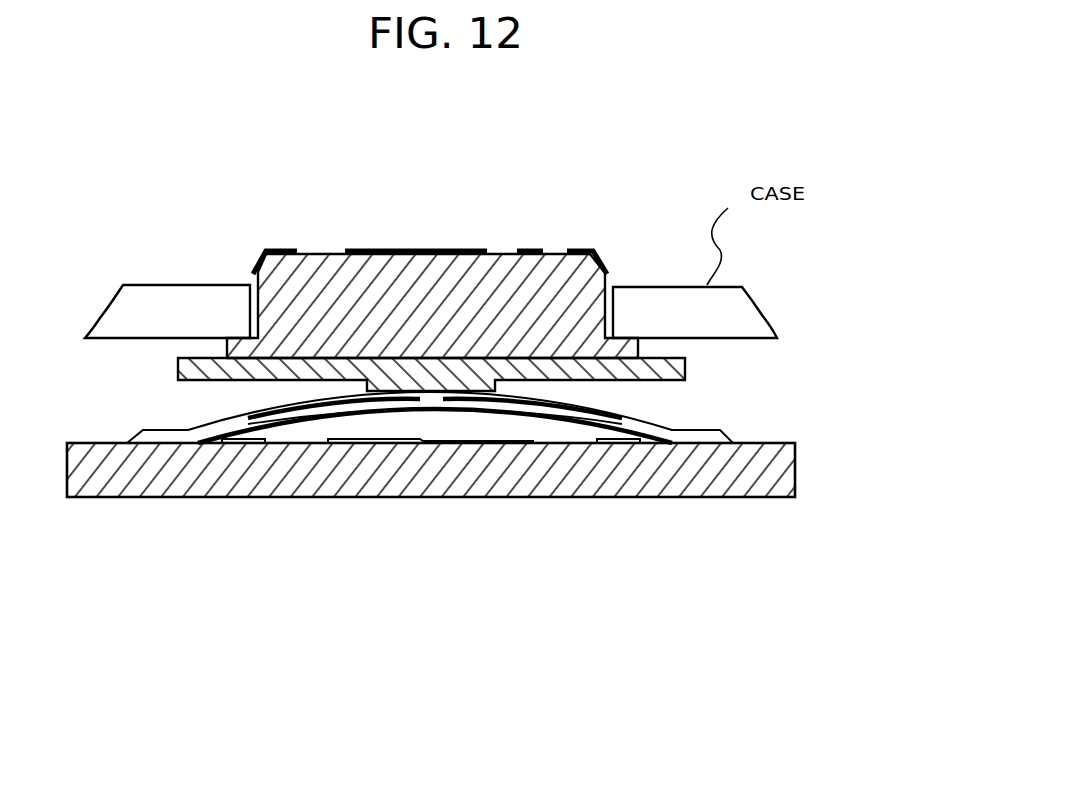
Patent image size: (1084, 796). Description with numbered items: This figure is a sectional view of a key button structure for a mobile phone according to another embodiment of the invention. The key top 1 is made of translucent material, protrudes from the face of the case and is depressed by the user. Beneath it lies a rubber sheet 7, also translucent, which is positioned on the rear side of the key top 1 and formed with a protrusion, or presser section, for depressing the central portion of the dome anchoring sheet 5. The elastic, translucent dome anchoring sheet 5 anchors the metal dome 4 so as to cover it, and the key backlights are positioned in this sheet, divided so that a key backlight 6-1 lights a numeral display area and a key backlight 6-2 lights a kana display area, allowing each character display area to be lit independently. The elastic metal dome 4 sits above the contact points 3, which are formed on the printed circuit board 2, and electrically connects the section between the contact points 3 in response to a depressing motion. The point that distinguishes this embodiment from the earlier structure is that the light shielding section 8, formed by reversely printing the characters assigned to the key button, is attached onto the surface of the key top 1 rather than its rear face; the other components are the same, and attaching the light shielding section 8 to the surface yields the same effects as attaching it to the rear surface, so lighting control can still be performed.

The key top 1 is at (498, 267).
The printed circuit board 2 is at (90, 470).
The contact points 3 is at (246, 444).
The metal dome 4 is at (577, 424).
The dome anchoring sheet 5 is at (668, 425).
The key backlight 6-1 is at (300, 415).
The key backlight 6-2 is at (553, 410).
The rubber sheet 7 is at (687, 370).
The light shielding section 8 is at (397, 247).